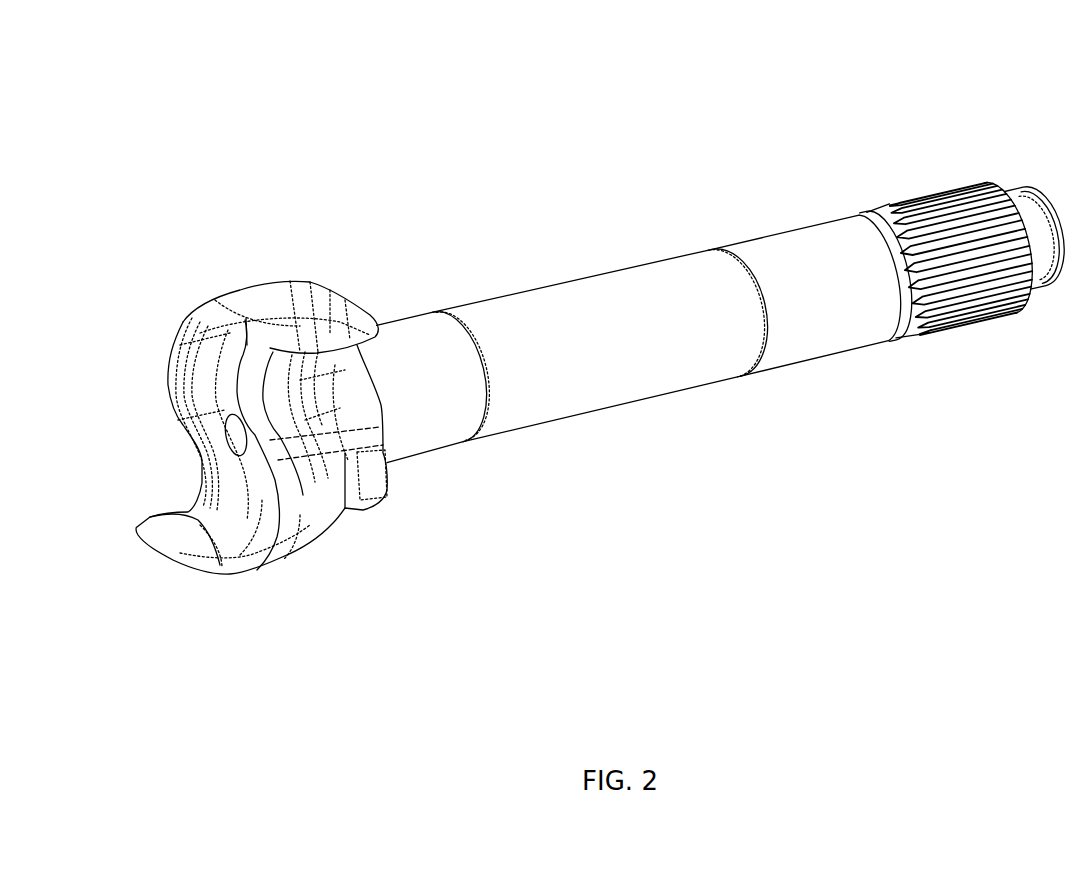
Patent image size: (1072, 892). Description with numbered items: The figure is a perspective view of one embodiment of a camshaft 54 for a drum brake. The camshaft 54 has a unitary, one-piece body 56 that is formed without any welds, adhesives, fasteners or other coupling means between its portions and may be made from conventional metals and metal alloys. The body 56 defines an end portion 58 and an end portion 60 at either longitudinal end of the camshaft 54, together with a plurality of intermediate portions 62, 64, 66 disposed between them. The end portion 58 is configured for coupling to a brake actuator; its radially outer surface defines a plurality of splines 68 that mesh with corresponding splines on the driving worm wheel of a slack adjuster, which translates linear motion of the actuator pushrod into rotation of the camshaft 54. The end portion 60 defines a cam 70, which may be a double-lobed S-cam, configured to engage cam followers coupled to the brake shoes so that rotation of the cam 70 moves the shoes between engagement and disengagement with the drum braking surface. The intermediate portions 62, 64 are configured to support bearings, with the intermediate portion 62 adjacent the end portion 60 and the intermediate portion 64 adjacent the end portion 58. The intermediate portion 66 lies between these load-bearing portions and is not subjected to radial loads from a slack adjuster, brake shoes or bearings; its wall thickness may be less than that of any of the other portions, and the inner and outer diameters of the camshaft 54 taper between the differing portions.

The camshaft 54 is at (513, 183).
The body 56 is at (710, 437).
The end portion 58 is at (1025, 147).
The end portion 60 is at (183, 300).
The intermediate portion 62 is at (430, 297).
The intermediate portion 64 is at (847, 195).
The intermediate portion 66 is at (712, 228).
The splines 68 is at (1040, 350).
The cam 70 is at (293, 543).